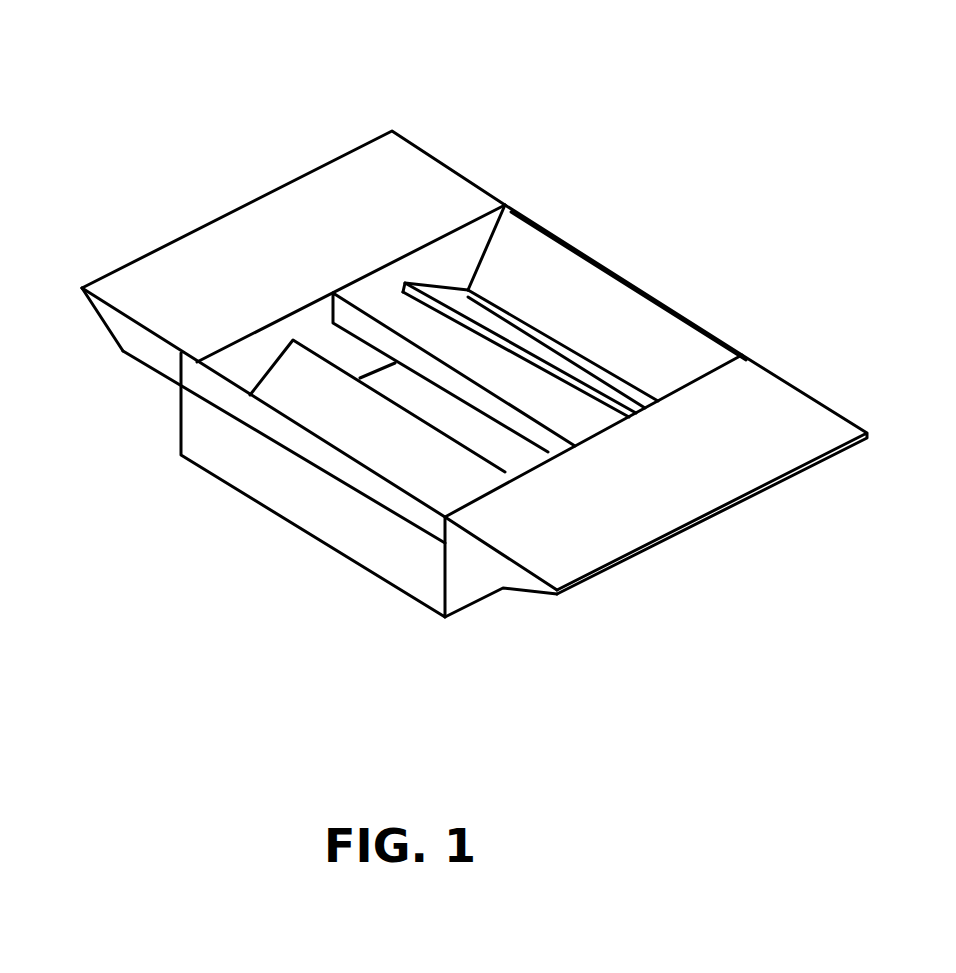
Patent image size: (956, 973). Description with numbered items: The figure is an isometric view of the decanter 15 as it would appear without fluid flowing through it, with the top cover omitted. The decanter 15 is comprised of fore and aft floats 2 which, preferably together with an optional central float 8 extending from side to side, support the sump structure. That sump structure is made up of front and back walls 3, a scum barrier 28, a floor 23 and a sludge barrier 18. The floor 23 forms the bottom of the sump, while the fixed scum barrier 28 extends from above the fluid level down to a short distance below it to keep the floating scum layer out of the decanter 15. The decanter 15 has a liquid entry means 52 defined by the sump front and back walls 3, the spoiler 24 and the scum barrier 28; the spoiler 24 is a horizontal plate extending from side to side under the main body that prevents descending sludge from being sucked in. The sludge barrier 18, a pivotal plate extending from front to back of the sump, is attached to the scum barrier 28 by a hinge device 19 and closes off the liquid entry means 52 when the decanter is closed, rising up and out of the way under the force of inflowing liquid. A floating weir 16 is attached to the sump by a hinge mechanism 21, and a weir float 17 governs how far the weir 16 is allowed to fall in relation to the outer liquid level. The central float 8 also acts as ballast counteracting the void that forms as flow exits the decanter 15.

The fore and aft floats 2 is at (267, 245).
The front and back walls 3 is at (240, 364).
The central float 8 is at (370, 292).
The decanter 15 is at (707, 95).
The floating weir 16 is at (523, 343).
The weir float 17 is at (413, 290).
The sludge barrier 18 is at (645, 318).
The hinge device 19 is at (505, 203).
The hinge mechanism 21 is at (633, 380).
The floor 23 is at (500, 453).
The spoiler 24 is at (342, 538).
The scum barrier 28 is at (223, 394).
The liquid entry means 52 is at (245, 457).